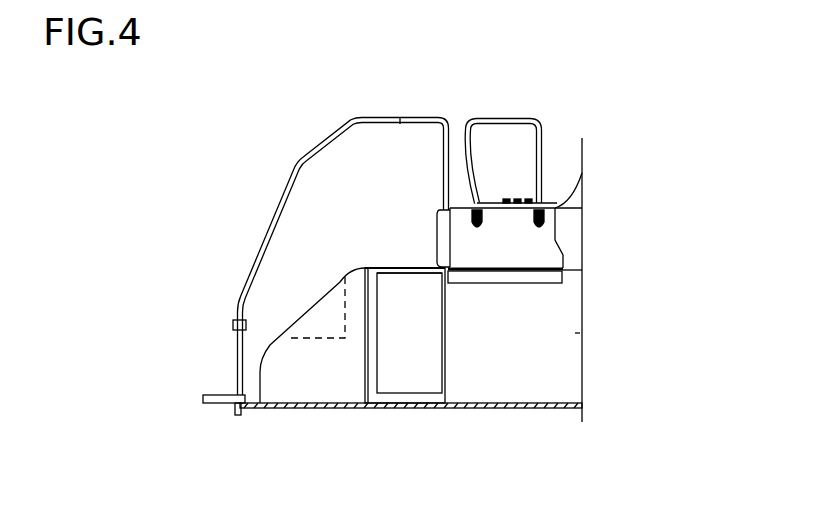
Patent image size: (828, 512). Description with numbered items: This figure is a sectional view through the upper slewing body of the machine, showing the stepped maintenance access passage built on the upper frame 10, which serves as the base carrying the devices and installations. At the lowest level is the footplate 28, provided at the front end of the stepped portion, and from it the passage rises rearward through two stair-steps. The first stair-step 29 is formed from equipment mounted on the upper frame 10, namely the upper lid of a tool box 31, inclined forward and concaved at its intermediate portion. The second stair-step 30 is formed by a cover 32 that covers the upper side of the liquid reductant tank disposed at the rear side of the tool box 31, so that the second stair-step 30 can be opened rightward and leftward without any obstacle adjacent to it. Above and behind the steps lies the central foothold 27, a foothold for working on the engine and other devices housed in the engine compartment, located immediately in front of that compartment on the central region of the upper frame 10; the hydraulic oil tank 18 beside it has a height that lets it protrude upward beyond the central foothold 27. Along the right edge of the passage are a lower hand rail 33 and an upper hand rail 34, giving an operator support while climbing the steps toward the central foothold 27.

The upper frame 10 is at (458, 410).
The hydraulic oil tank 18 is at (520, 200).
The central foothold 27 is at (525, 265).
The footplate 28 is at (212, 412).
The first stair-step 29 is at (318, 336).
The second stair-step 30 is at (446, 337).
The tool box 31 is at (330, 390).
The cover 32 is at (393, 266).
The lower hand rail 33 is at (413, 118).
The upper hand rail 34 is at (502, 118).